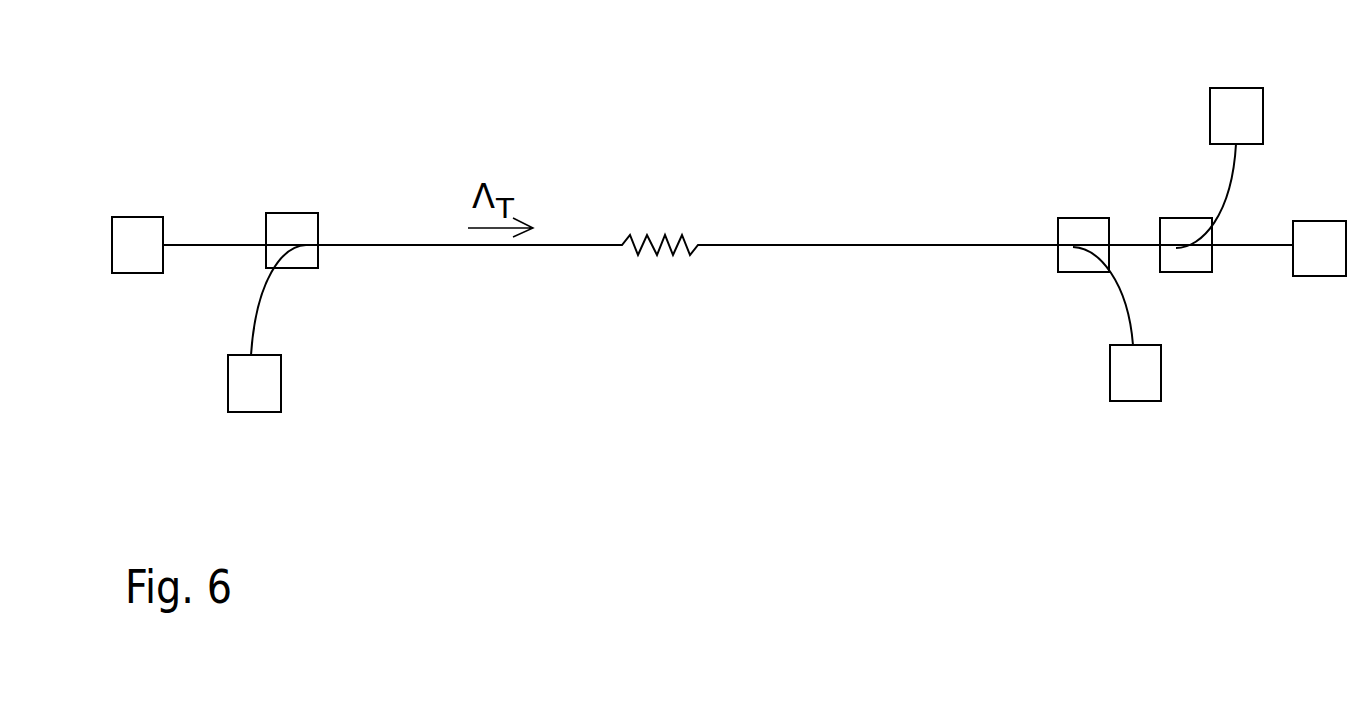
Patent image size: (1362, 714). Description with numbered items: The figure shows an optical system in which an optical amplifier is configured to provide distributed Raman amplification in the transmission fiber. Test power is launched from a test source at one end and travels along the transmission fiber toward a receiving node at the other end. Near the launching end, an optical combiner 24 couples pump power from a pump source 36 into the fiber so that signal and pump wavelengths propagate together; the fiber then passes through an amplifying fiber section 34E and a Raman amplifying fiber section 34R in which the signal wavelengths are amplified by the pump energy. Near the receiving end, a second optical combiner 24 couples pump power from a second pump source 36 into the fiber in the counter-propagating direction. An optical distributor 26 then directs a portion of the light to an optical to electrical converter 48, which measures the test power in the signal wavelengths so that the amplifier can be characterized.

The optical combiner 24 is at (295, 210).
The pump source 36 is at (257, 412).
The amplifying fiber (erbium section) 34E is at (772, 245).
The Raman amplifying fiber 34R is at (973, 245).
The optical distributor 26 is at (1186, 273).
The optical to electrical converter 48 is at (1229, 88).